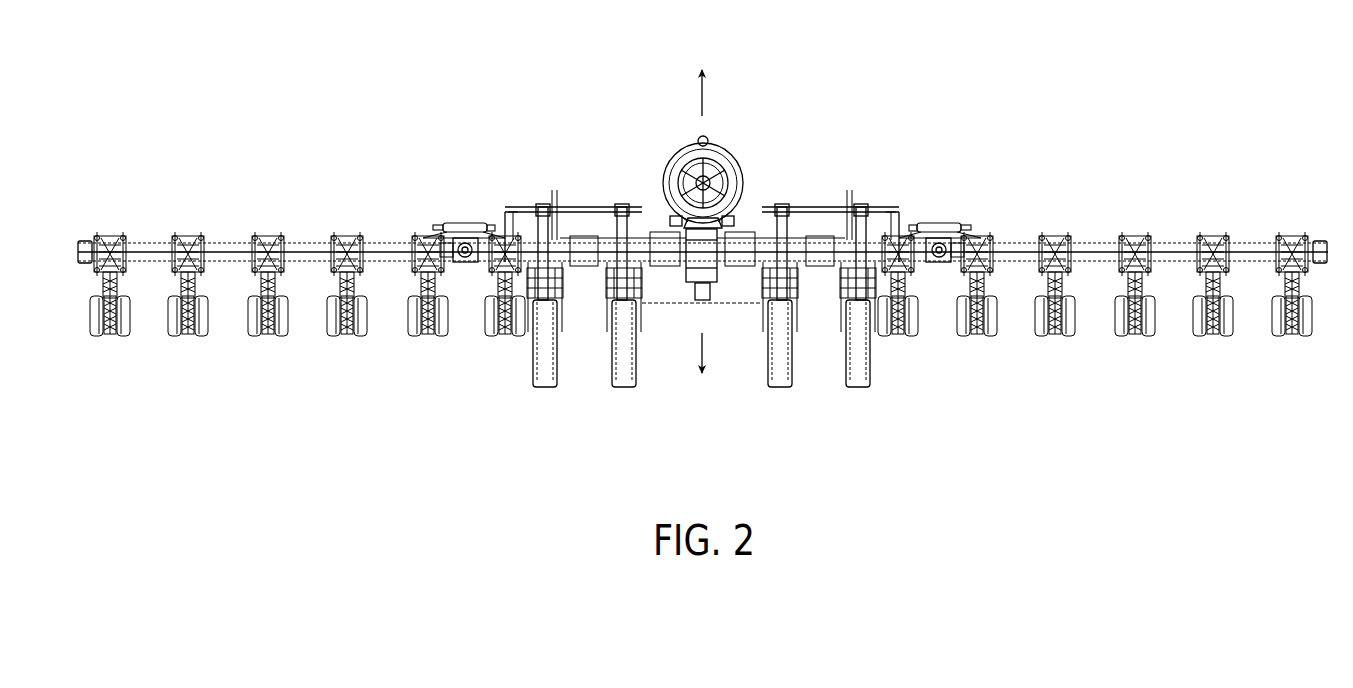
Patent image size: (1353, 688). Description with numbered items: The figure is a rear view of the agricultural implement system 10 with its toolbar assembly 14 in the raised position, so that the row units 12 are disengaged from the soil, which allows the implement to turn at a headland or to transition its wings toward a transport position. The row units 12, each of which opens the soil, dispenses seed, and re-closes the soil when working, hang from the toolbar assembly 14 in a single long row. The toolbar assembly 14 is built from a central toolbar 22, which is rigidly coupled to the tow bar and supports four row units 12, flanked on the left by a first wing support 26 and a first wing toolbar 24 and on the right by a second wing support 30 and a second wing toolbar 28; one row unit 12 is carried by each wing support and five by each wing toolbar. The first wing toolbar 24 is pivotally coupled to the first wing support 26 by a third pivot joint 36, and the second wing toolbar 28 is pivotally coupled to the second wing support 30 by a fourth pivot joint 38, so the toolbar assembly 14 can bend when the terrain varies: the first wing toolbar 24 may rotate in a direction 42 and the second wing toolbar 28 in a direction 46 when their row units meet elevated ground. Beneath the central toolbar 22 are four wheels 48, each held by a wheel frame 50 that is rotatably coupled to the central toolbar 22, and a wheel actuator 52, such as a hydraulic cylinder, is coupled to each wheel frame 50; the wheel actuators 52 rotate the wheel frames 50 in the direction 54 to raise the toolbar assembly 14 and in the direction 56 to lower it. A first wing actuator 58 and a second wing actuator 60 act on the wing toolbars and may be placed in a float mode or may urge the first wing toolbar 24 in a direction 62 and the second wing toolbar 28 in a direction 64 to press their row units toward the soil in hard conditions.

The agricultural implement system 10 is at (752, 95).
The row unit 12 is at (111, 352).
The toolbar assembly 14 is at (442, 395).
The central toolbar 22 is at (799, 250).
The first wing toolbar 24 is at (292, 252).
The first wing support 26 is at (482, 255).
The second wing toolbar 28 is at (1112, 250).
The second wing support 30 is at (923, 255).
The third pivot joint 36 is at (465, 258).
The fourth pivot joint 38 is at (939, 258).
The direction 42 is at (447, 183).
The direction 46 is at (960, 185).
The wheel 48 is at (624, 390).
The wheel frame 50 is at (609, 301).
The wheel actuator 52 is at (622, 217).
The direction 54 is at (703, 348).
The direction 56 is at (703, 100).
The first wing actuator 58 is at (460, 228).
The second wing actuator 60 is at (945, 228).
The direction 62 is at (480, 127).
The direction 64 is at (923, 125).